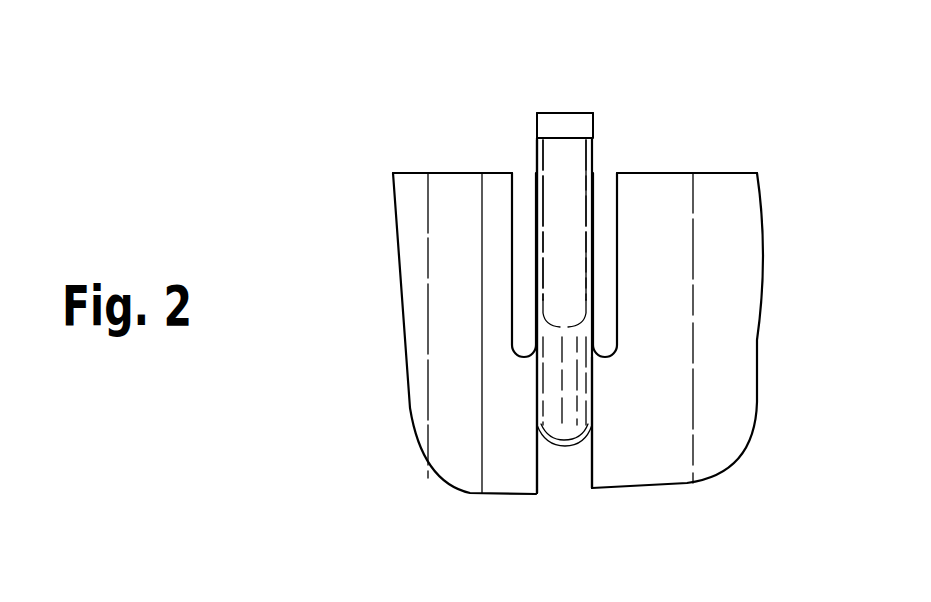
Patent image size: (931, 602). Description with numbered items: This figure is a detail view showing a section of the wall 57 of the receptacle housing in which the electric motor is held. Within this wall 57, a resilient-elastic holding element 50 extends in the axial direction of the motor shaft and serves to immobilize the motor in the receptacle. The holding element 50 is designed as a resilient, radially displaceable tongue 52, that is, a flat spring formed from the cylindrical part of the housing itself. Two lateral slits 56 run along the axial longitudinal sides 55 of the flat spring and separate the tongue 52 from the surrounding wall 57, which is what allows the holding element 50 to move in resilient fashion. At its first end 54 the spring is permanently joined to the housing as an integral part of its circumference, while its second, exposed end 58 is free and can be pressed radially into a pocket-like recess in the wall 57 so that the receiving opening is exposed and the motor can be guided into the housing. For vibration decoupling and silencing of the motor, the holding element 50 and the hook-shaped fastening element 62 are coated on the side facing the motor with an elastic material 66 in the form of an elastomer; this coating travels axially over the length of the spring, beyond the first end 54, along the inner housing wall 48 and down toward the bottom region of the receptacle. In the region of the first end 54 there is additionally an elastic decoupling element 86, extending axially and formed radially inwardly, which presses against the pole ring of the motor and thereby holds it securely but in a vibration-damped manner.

The inner housing wall 48 is at (723, 254).
The resilient-elastic holding element 50 is at (568, 195).
The tongue 52 is at (568, 195).
The first end 54 is at (596, 336).
The axial longitudinal side 55 is at (537, 233).
The slit 56 is at (525, 245).
The wall 57 is at (453, 425).
The second exposed end 58 is at (577, 110).
The hook-shaped fastening element 62 is at (557, 127).
The elastic material 66 is at (562, 268).
The elastic decoupling element 86 is at (557, 358).